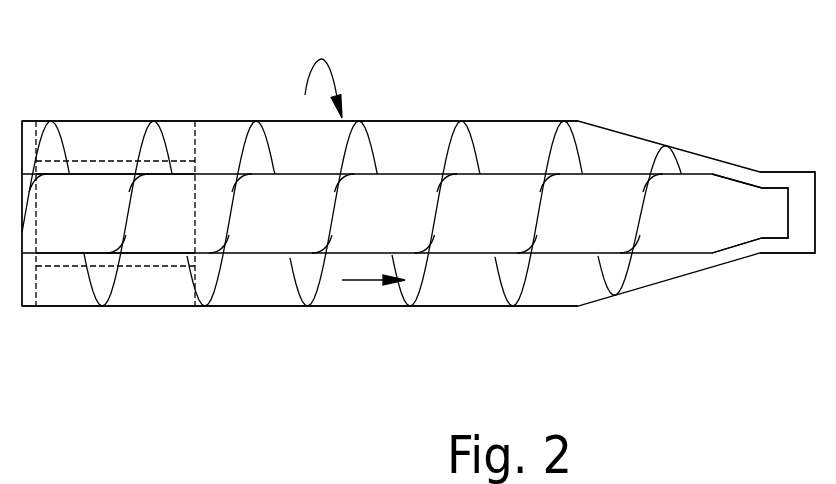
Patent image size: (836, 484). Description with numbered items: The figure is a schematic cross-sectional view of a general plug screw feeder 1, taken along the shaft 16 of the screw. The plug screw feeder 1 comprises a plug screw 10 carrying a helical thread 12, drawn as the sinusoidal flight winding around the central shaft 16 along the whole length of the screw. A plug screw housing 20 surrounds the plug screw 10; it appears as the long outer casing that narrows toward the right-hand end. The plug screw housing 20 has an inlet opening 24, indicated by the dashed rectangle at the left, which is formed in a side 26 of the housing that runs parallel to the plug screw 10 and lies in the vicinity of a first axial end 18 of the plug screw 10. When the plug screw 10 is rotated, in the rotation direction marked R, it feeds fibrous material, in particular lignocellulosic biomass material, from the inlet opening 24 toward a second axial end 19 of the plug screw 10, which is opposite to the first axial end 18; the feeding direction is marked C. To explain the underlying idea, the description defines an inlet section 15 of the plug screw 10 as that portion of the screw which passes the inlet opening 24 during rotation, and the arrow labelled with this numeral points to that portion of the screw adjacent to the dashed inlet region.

The plug screw feeder 1 is at (418, 241).
The plug screw 10 is at (512, 193).
The thread 12 is at (562, 132).
The inlet section 15 is at (170, 90).
The shaft 16 is at (705, 180).
The first axial end 18 is at (23, 308).
The second axial end 19 is at (783, 178).
The plug screw housing 20 is at (582, 308).
The inlet opening 24 is at (97, 161).
The side 26 is at (208, 210).